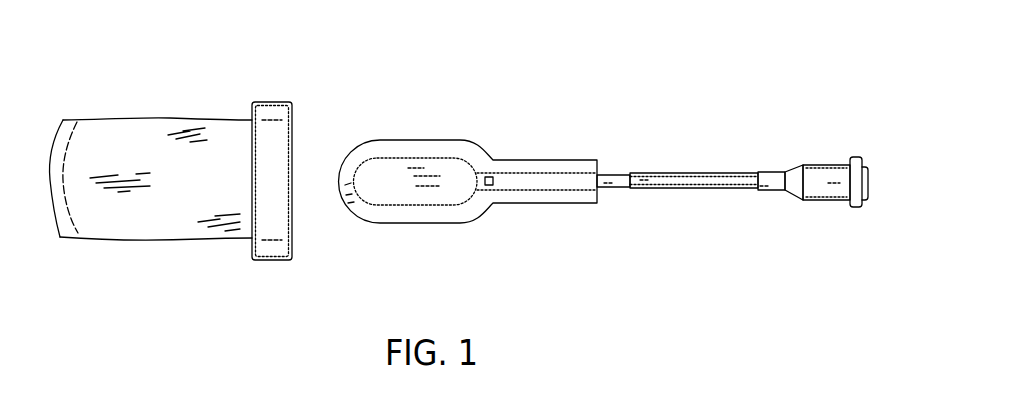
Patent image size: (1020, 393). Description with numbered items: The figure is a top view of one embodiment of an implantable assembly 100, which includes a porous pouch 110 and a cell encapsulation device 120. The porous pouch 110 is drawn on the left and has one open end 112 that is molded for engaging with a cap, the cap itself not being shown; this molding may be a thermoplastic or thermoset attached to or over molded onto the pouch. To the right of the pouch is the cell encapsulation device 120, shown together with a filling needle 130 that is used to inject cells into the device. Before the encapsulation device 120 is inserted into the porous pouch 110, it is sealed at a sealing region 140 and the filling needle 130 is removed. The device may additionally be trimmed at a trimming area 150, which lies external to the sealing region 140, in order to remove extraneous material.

The implantable assembly 100 is at (313, 93).
The porous pouch 110 is at (130, 150).
The open end 112 is at (300, 206).
The cell encapsulation device 120 is at (385, 172).
The filling needle 130 is at (688, 176).
The sealing region 140 is at (477, 162).
The trimming area 150 is at (495, 186).